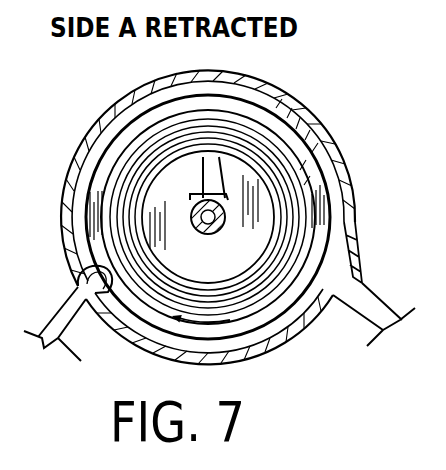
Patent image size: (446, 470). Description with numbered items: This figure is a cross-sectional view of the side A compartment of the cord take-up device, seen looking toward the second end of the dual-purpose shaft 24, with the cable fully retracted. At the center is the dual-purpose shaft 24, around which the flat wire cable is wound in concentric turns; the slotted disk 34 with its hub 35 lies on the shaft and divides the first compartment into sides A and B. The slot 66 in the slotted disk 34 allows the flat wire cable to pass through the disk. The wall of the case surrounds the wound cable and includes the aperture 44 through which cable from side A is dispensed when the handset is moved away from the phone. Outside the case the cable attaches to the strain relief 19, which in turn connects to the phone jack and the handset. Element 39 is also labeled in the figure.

The strain relief 19 is at (82, 336).
The dual-purpose shaft 24 is at (230, 208).
The slotted disk 34 is at (107, 157).
The hub 35 is at (167, 175).
The arm plate 39 is at (226, 198).
The aperture 44 is at (58, 278).
The slot 66 is at (203, 178).